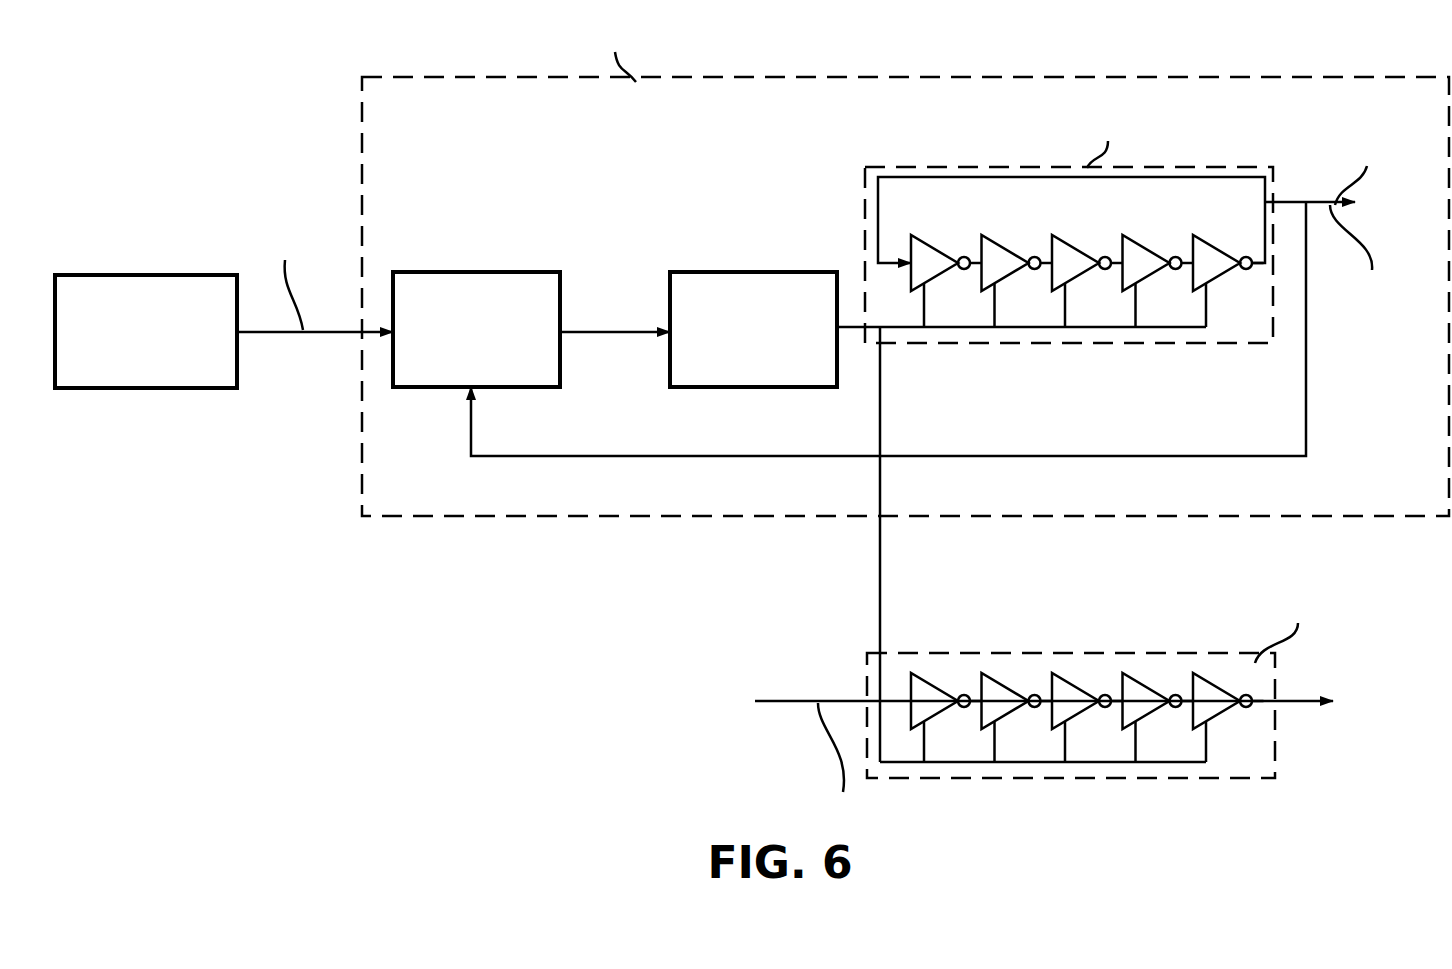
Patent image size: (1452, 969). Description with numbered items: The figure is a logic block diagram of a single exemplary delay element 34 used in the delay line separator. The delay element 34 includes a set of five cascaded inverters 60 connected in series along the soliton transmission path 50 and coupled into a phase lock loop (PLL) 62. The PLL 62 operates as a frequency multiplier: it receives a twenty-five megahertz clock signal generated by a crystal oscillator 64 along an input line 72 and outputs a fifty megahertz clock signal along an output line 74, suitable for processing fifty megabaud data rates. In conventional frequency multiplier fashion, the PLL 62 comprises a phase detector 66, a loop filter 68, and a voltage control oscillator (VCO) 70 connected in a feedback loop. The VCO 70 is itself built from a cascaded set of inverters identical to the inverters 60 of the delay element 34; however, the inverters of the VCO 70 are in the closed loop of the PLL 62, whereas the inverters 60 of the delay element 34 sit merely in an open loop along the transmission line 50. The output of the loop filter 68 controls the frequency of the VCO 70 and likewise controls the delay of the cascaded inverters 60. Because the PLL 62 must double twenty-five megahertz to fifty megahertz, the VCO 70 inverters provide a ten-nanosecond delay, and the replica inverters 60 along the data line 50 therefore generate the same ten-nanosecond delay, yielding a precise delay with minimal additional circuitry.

The phase lock loop (PLL) 62 is at (1140, 85).
The crystal oscillator 64 is at (187, 382).
The input line 72 is at (313, 334).
The phase detector 66 is at (490, 285).
The loop filter 68 is at (766, 285).
The voltage control oscillator (VCO) 70 is at (1069, 229).
The cascaded inverters 60 is at (927, 258).
The output line 74 is at (1280, 202).
The soliton transmission path 50 is at (800, 701).
The delay element 34 is at (1235, 765).